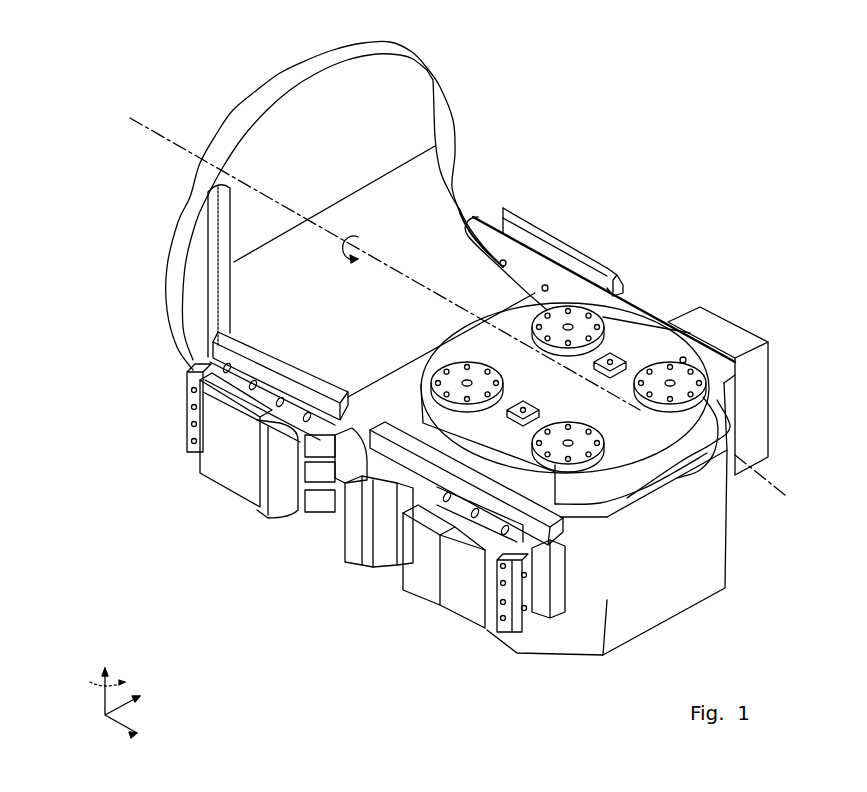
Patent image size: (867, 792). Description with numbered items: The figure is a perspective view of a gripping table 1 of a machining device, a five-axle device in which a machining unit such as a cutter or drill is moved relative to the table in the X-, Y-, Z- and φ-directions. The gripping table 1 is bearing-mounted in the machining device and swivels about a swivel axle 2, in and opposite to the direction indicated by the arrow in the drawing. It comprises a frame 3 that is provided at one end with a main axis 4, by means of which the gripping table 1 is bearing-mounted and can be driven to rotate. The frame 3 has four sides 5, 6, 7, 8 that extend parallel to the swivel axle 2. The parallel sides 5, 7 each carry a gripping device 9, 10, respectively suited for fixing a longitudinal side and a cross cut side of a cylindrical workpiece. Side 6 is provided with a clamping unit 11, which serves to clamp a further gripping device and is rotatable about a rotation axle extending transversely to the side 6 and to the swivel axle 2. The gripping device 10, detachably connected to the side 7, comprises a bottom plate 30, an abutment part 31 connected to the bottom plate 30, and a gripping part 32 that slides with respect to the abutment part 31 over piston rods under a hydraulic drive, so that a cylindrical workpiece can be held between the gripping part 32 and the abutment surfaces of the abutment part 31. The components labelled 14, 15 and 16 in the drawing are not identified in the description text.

The gripping table 1 is at (669, 157).
The swivel axle 2 is at (260, 195).
The frame 3 is at (678, 588).
The main axis 4 is at (192, 168).
The side 5 is at (505, 633).
The side 6 is at (385, 395).
The side 7 is at (453, 197).
The side 8 is at (606, 653).
The gripping device 9 is at (225, 508).
The gripping device 10 is at (763, 330).
The clamping unit 11 is at (660, 418).
The slider 14 is at (368, 548).
The first gripper block 15 is at (225, 462).
The second gripper block 16 is at (463, 607).
The bottom plate 30 is at (495, 208).
The abutment part 31 is at (713, 323).
The gripping part 32 is at (570, 247).